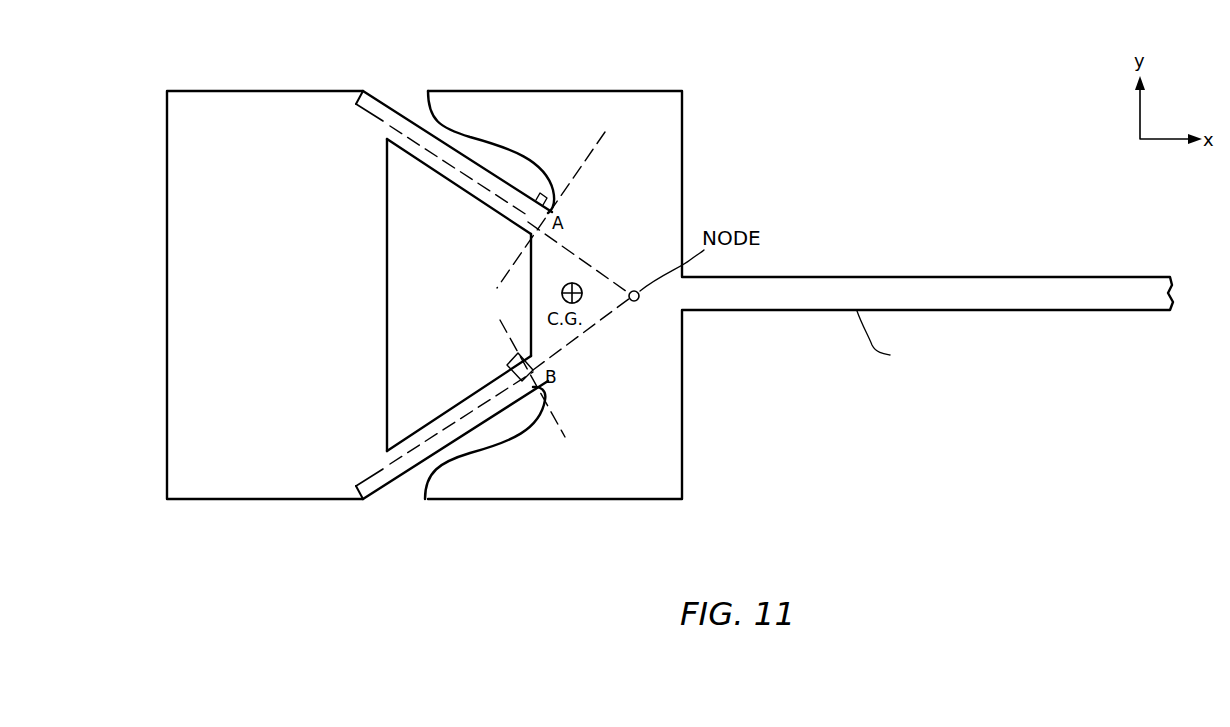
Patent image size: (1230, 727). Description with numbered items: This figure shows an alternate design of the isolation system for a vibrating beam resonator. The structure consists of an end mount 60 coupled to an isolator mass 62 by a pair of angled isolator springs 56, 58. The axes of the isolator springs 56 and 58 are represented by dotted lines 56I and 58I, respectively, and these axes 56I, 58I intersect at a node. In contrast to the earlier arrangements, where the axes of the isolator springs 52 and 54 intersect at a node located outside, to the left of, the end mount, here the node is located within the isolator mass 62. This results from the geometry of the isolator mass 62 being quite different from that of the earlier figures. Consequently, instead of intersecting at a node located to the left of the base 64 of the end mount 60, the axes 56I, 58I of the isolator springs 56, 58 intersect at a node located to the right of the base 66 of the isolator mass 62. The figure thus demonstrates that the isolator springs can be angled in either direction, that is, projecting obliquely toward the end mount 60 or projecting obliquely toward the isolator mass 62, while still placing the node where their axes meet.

The isolator spring 52 is at (572, 174).
The isolator spring 54 is at (562, 436).
The isolator spring 56 is at (460, 190).
The axis of isolator spring 56I is at (382, 114).
The isolator spring 58 is at (395, 480).
The axis of isolator spring 58I is at (430, 442).
The end mount 60 is at (262, 91).
The isolator mass 62 is at (630, 92).
The base of end mount 64 is at (388, 333).
The base of isolator mass 66 is at (530, 304).